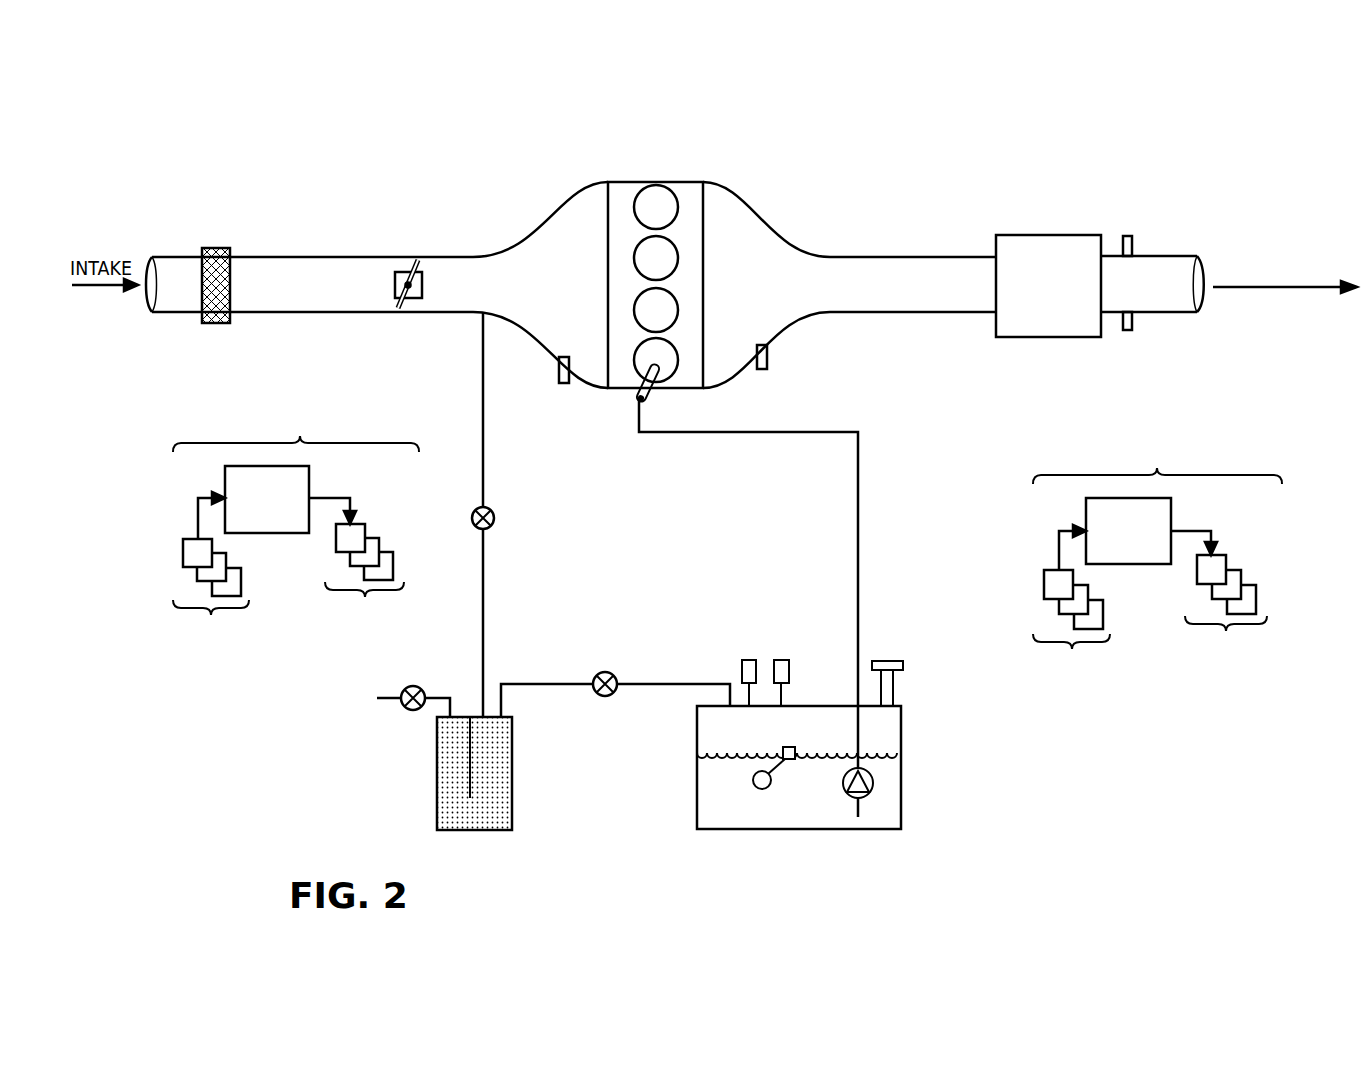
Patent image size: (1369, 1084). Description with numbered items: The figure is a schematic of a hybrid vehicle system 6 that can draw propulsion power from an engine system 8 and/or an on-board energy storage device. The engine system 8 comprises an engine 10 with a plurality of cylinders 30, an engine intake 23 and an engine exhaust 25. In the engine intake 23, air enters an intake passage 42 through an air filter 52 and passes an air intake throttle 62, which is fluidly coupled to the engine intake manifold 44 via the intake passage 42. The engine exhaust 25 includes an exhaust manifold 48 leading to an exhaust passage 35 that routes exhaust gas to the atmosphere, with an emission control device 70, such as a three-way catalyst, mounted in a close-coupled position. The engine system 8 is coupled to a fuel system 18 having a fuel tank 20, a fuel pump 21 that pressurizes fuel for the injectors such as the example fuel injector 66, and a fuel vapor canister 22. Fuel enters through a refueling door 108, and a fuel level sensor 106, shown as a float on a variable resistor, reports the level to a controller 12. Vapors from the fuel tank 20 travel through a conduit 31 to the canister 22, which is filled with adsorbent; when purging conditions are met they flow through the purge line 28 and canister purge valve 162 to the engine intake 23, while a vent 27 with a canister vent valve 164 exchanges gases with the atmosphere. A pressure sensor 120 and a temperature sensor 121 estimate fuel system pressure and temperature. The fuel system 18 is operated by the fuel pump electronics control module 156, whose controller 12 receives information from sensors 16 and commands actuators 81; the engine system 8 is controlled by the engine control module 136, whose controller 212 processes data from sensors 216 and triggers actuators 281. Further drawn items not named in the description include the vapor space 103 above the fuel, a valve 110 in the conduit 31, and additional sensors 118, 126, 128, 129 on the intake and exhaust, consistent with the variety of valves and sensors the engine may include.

The hybrid vehicle system 6 is at (163, 155).
The engine system 8 is at (1238, 152).
The engine 10 is at (672, 285).
The controller 12 is at (1128, 531).
The sensors 16 is at (1071, 608).
The fuel system 18 is at (947, 856).
The fuel tank 20 is at (803, 614).
The fuel pump 21 is at (873, 785).
The fuel vapor canister 22 is at (498, 830).
The engine intake 23 is at (533, 205).
The engine exhaust 25 is at (818, 208).
The vent 27 is at (407, 690).
The purge line 28 is at (508, 514).
The cylinders 30 is at (676, 198).
The conduit 31 is at (615, 684).
The exhaust passage 35 is at (1178, 256).
The intake passage 42 is at (178, 313).
The engine intake manifold 44 is at (572, 298).
The exhaust manifold 48 is at (779, 298).
The air filter 52 is at (216, 247).
The air intake throttle 62 is at (421, 291).
The fuel injector 66 is at (648, 392).
The emission control device 70 is at (1037, 235).
The actuators 81 is at (1219, 602).
The fuel vapor 103 is at (754, 741).
The fuel level sensor 106 is at (793, 748).
The refueling door 108 is at (893, 661).
The fuel tank isolation valve 110 is at (600, 673).
The intake pressure sensor 118 is at (559, 362).
The pressure sensor 120 is at (790, 668).
The temperature sensor 121 is at (748, 660).
The exhaust gas sensor 126 is at (767, 350).
The exhaust sensor 128 is at (1128, 330).
The exhaust sensor 129 is at (1128, 236).
The engine control module 136 is at (296, 525).
The fuel pump electronics control module 156 is at (1153, 557).
The canister purge valve 162 is at (492, 512).
The canister vent valve 164 is at (416, 686).
The controller 212 is at (267, 499).
The sensors 216 is at (211, 575).
The actuators 281 is at (356, 569).